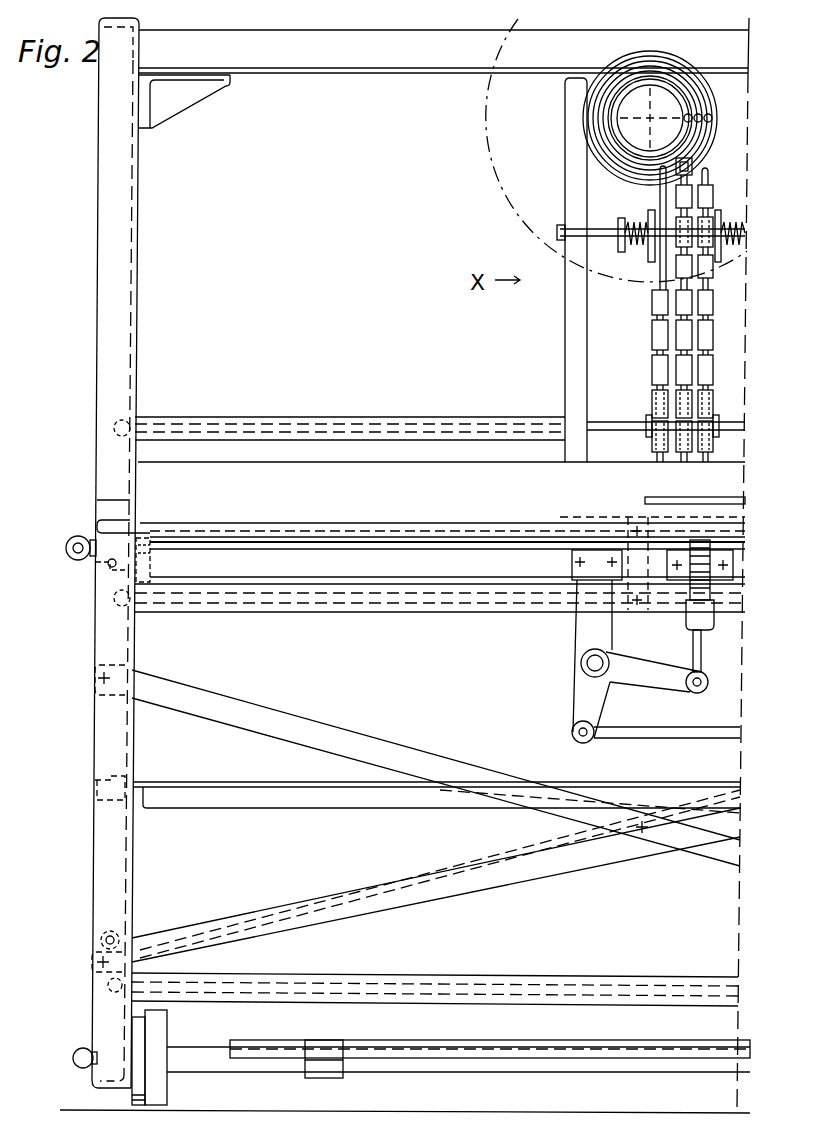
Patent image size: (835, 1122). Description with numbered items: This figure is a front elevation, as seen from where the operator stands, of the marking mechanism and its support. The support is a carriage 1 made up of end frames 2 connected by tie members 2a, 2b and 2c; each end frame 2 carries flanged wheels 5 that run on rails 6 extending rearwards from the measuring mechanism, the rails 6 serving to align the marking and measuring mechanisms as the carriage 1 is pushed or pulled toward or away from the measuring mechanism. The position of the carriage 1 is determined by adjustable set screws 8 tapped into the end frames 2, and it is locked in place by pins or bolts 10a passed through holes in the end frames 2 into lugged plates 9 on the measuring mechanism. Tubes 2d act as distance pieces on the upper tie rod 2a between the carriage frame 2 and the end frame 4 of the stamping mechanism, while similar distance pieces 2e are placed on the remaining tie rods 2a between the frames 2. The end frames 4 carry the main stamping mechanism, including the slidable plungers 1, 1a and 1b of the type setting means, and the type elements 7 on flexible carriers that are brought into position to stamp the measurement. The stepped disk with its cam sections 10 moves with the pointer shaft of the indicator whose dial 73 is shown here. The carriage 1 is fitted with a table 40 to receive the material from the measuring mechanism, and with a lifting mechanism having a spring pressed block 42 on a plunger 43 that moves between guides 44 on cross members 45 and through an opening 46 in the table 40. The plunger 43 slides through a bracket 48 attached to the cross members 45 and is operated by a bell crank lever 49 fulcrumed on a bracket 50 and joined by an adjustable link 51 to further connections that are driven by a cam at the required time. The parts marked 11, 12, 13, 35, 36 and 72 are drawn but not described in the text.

The carriage 1 is at (686, 119).
The slidable plunger 1a is at (700, 116).
The slidable plunger 1b is at (710, 121).
The end frame 2 is at (110, 767).
The tie member 2a is at (205, 432).
The tie member 2b is at (540, 855).
The tie member 2c is at (618, 786).
The tube distance piece 2d is at (378, 432).
The distance piece 2e is at (545, 988).
The end frame 4 is at (575, 313).
The flanged wheel 5 is at (160, 1035).
The rail 6 is at (134, 1102).
The type element 7 is at (712, 192).
The adjustable set screw 8 is at (100, 572).
The plate 9 is at (148, 545).
The cam section 10 is at (662, 72).
The pin or bolt 10a is at (76, 538).
The slide block 11 is at (318, 1065).
The rod 12 is at (206, 1062).
The bar 13 is at (632, 1058).
The top rail 35 is at (410, 50).
The corner bracket 36 is at (172, 95).
The table 40 is at (405, 512).
The spring pressed bed or block 42 is at (645, 515).
The plunger 43 is at (694, 652).
The guide 44 is at (630, 519).
The cross member 45 is at (497, 562).
The opening 46 is at (686, 504).
The bracket 48 is at (690, 618).
The bell crank lever 49 is at (643, 680).
The bracket 50 is at (580, 630).
The adjustable link 51 is at (678, 735).
The shaft 72 is at (596, 240).
The dial 73 is at (500, 185).